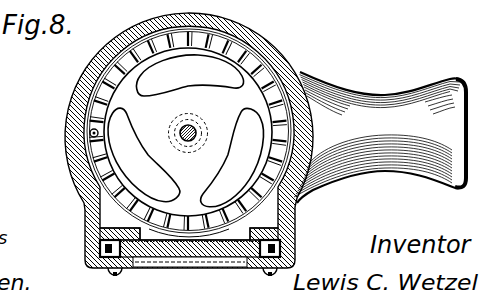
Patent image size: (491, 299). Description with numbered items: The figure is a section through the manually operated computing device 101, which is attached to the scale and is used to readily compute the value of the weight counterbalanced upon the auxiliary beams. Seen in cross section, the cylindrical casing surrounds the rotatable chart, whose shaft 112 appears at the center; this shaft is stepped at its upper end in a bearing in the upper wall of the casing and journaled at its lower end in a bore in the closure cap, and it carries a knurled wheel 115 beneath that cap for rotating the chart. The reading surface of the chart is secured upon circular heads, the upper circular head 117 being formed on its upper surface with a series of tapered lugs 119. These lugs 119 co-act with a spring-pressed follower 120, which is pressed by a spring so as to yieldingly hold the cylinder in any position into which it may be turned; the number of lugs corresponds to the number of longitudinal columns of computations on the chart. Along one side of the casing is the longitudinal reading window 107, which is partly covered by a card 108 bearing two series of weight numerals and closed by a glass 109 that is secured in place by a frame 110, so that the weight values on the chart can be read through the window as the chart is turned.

The computing device 101 is at (59, 166).
The reading window 107 is at (296, 228).
The card 108 is at (83, 215).
The glass 109 is at (160, 268).
The frame 110 is at (96, 268).
The shaft 112 is at (199, 125).
The knurled wheel 115 is at (194, 116).
The upper circular head 117 is at (183, 88).
The tapered lugs 119 is at (102, 83).
The spring-pressed follower 120 is at (83, 135).